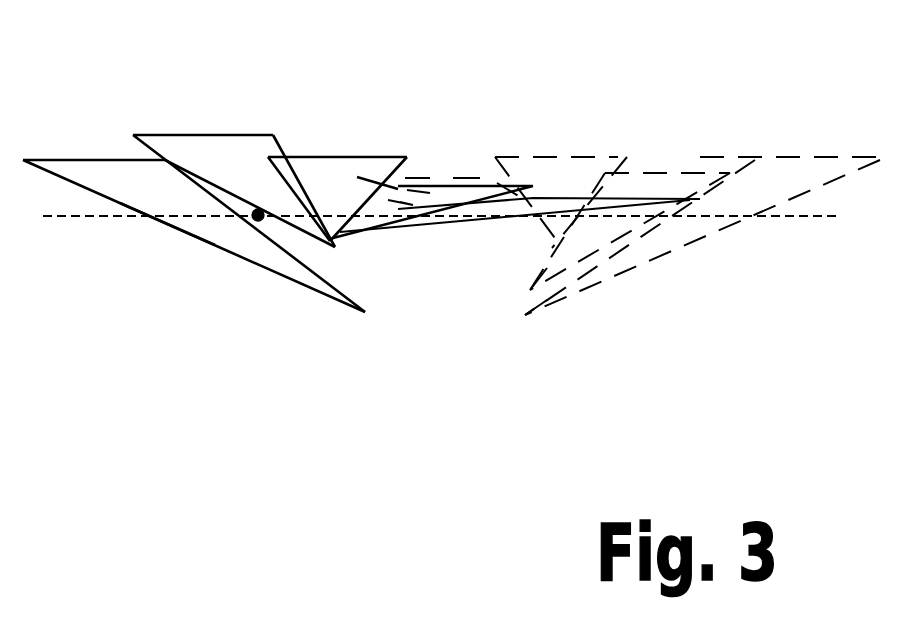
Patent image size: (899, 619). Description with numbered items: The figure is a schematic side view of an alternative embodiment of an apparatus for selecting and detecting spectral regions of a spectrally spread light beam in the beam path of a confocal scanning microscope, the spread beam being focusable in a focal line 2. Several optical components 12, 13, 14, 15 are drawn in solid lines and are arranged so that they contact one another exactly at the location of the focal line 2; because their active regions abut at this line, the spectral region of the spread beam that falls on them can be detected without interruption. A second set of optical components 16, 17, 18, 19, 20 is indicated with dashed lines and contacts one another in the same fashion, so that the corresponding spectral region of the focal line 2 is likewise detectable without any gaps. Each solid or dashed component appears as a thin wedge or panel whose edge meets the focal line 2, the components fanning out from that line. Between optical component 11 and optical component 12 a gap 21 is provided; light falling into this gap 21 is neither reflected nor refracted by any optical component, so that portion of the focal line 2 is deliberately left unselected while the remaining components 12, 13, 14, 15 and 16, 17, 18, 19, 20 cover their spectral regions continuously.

The focal line 2 is at (85, 216).
The optical component 11 is at (213, 237).
The optical component 12 is at (253, 162).
The optical component 13 is at (336, 176).
The optical component 14 is at (462, 198).
The optical component 15 is at (568, 200).
The optical component 16 is at (378, 208).
The optical component 17 is at (462, 197).
The optical component 18 is at (555, 178).
The optical component 19 is at (652, 193).
The optical component 20 is at (777, 178).
The gap 21 is at (257, 222).